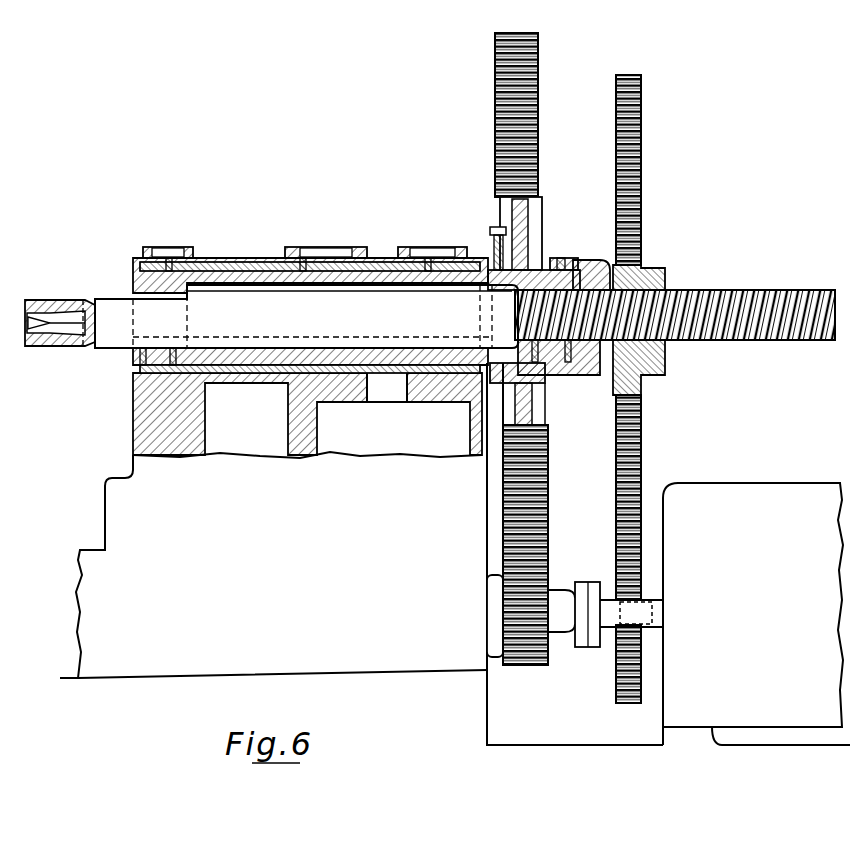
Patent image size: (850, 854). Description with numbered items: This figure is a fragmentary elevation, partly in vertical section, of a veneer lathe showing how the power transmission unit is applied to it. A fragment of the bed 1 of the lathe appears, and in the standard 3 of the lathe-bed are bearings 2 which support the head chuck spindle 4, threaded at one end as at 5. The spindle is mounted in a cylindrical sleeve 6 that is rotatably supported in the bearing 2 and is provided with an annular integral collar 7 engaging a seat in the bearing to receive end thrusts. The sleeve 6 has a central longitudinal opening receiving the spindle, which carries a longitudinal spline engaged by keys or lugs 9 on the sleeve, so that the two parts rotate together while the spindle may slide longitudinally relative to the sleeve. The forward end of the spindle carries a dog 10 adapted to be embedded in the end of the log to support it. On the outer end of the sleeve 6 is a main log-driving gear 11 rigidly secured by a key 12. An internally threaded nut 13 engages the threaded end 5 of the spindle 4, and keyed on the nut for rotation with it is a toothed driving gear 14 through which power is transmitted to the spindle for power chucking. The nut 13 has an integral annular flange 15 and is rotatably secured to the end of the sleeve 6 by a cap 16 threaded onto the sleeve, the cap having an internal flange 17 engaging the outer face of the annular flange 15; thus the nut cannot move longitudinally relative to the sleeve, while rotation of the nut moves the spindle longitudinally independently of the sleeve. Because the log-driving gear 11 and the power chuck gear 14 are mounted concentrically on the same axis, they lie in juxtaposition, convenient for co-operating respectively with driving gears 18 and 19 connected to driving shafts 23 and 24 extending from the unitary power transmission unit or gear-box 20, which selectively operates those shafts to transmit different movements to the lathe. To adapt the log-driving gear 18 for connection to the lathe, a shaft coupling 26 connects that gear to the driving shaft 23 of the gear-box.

The bed 1 is at (273, 566).
The bearings 2 is at (140, 368).
The standard 3 is at (135, 420).
The head chuck spindle 4 is at (112, 300).
The threaded end 5 is at (722, 291).
The cylindrical sleeve 6 is at (381, 374).
The annular integral collar 7 is at (247, 258).
The keys or lugs 9 is at (136, 352).
The dog 10 is at (62, 301).
The main log-driving gear 11 is at (496, 178).
The key 12 is at (526, 272).
The internally threaded nut 13 is at (650, 360).
The toothed driving gear 14 is at (642, 470).
The annular flange 15 is at (586, 375).
The cap 16 is at (576, 268).
The internal flange 17 is at (603, 265).
The driving gear 18 is at (534, 666).
The driving gear 19 is at (631, 690).
The power transmission unit or gear-box 20 is at (756, 614).
The driving shaft 23 is at (607, 605).
The driving shaft 24 is at (656, 618).
The shaft coupling 26 is at (585, 648).